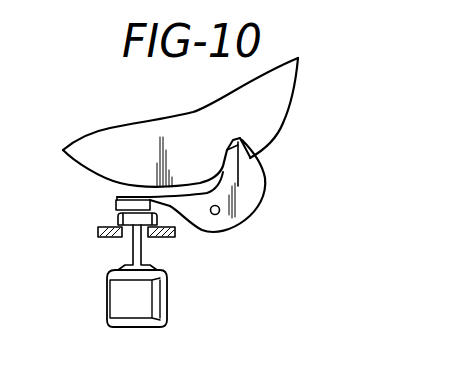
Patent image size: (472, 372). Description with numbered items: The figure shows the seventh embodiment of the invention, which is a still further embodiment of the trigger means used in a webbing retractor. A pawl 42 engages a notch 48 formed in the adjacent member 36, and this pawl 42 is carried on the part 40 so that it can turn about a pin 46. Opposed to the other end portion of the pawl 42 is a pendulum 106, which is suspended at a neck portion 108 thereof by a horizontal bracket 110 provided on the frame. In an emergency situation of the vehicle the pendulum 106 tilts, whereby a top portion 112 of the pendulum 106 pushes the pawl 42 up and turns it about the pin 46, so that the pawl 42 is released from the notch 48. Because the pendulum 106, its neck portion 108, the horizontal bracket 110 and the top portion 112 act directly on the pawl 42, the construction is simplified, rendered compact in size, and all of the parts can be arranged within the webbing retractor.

The boot sole 36 is at (283, 99).
The clamp member 40 is at (212, 200).
The pawl 42 is at (255, 203).
The pin 46 is at (217, 215).
The notch 48 is at (222, 151).
The pendulum 106 is at (160, 305).
The neck portion 108 is at (141, 252).
The horizontal bracket 110 is at (98, 228).
The top portion 112 is at (117, 201).